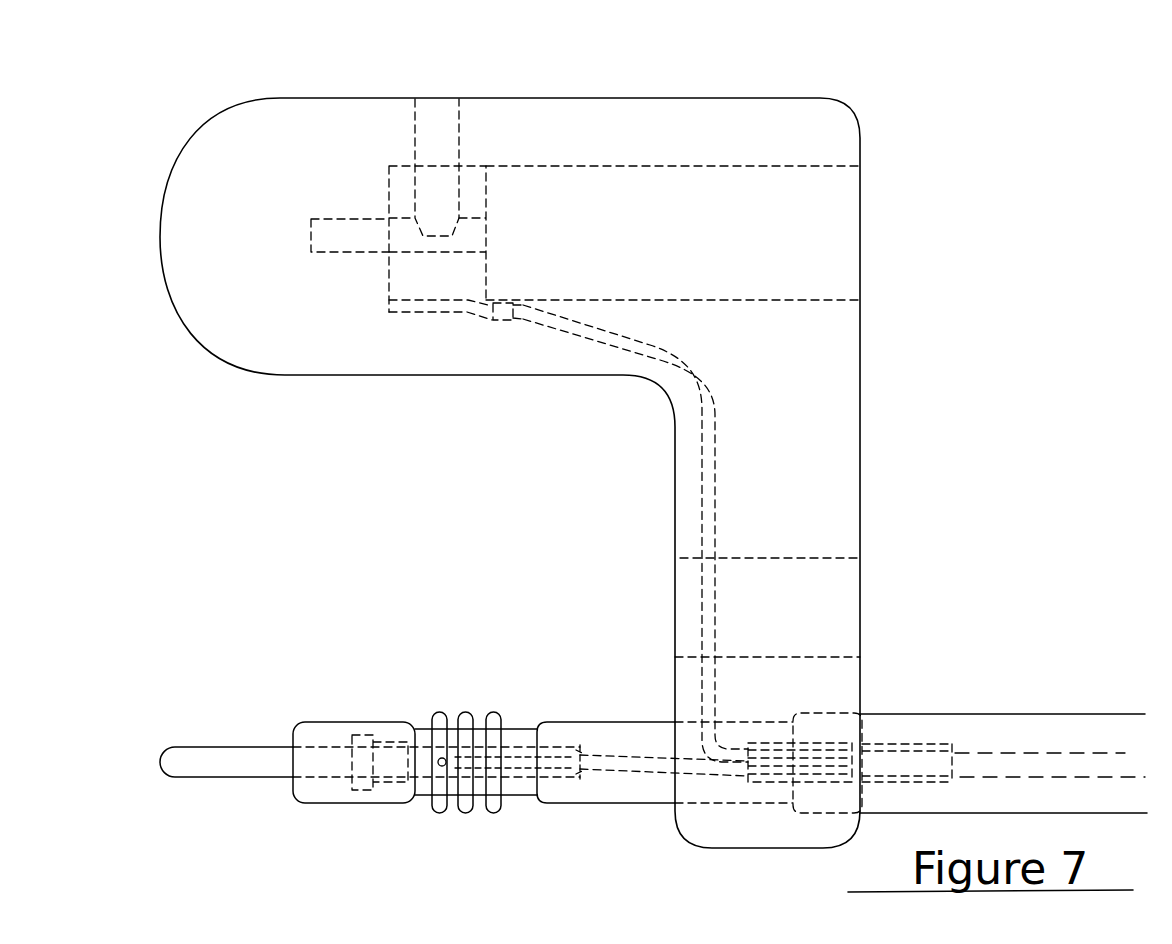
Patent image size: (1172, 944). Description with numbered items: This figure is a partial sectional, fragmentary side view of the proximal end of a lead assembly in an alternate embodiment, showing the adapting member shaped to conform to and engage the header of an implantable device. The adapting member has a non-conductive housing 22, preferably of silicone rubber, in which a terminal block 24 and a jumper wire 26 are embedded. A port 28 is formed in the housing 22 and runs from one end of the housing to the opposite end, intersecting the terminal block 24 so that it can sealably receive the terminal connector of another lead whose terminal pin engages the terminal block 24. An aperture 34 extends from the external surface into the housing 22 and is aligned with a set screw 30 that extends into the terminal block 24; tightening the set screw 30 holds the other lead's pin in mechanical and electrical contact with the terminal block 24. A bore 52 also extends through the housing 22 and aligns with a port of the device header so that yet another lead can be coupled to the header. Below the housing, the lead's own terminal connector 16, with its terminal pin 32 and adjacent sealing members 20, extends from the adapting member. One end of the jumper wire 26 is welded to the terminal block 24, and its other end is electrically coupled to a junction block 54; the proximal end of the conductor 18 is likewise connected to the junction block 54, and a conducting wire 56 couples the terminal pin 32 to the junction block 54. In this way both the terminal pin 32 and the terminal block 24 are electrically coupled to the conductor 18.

The lead terminal connector 16 is at (387, 723).
The conductor 18 is at (1030, 752).
The sealing members 20 is at (467, 710).
The housing 22 is at (653, 120).
The terminal block 24 is at (400, 272).
The jumper wire 26 is at (707, 506).
The port 28 is at (825, 212).
The set screw 30 is at (459, 187).
The terminal pin 32 is at (205, 753).
The aperture 34 is at (443, 123).
The bore 52 is at (823, 598).
The junction block 54 is at (888, 747).
The conducting wire 56 is at (618, 767).